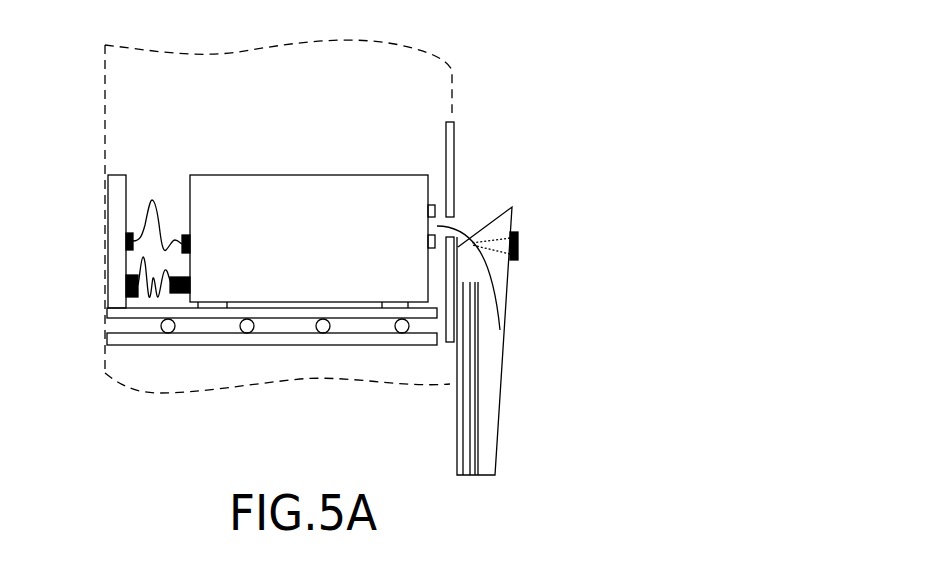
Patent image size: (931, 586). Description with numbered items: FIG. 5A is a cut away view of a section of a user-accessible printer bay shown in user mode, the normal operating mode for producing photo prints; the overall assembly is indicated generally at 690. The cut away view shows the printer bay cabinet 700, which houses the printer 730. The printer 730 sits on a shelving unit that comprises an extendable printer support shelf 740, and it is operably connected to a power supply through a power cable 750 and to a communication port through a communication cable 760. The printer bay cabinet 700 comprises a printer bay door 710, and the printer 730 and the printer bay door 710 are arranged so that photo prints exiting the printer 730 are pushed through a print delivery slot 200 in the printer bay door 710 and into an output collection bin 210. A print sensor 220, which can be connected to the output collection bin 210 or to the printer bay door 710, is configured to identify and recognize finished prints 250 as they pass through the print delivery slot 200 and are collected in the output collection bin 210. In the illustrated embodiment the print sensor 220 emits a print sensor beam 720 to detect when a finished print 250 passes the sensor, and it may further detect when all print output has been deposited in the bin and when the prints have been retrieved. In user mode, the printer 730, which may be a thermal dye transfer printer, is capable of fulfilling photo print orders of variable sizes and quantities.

The electronic device assembly 690 is at (517, 85).
The printer bay cabinet 700 is at (241, 389).
The printer bay door 710 is at (455, 153).
The print delivery slot 200 is at (455, 210).
The print sensor beam 720 is at (498, 233).
The print sensor 220 is at (525, 250).
The finished prints 250 is at (498, 310).
The output collection bin 210 is at (505, 373).
The printer 730 is at (266, 175).
The extendable printer support shelf 740 is at (152, 330).
The power cable 750 is at (128, 296).
The communication cable 760 is at (126, 240).